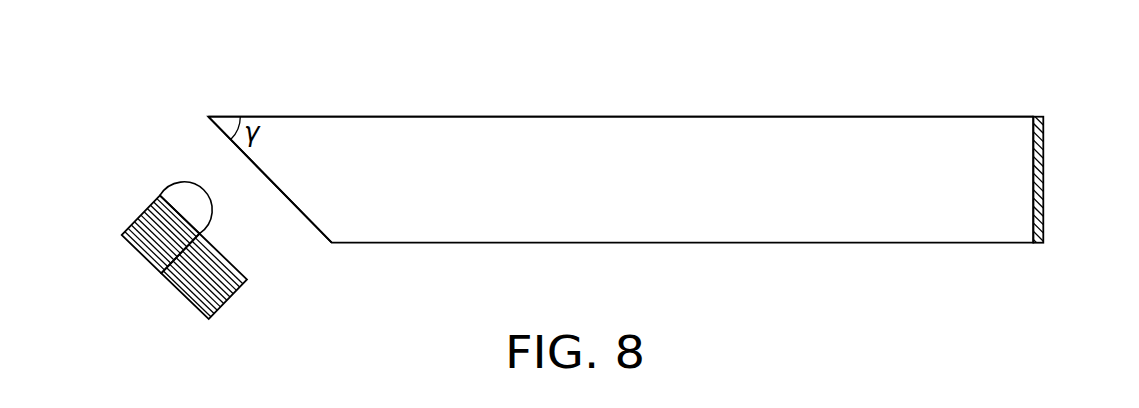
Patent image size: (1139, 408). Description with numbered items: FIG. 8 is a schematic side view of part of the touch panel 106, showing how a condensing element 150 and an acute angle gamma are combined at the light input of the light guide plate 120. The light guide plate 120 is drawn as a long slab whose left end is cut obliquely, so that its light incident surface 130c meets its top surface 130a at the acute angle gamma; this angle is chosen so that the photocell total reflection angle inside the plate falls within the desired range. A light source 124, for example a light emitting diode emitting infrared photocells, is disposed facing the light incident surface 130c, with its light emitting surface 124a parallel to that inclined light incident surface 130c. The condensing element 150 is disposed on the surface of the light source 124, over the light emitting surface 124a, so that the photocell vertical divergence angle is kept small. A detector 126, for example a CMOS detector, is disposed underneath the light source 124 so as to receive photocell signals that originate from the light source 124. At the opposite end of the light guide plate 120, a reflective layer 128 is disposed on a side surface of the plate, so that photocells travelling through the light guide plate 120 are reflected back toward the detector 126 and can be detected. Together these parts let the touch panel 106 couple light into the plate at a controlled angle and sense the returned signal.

The touch panel 106 is at (665, 182).
The light guide plate 120 is at (913, 133).
The light source 124 is at (153, 230).
The light emitting surface 124a is at (183, 217).
The detector 126 is at (207, 280).
The reflective layer 128 is at (1038, 183).
The top surface 130a is at (347, 115).
The light incident surface 130c is at (255, 165).
The condensing element 150 is at (175, 193).